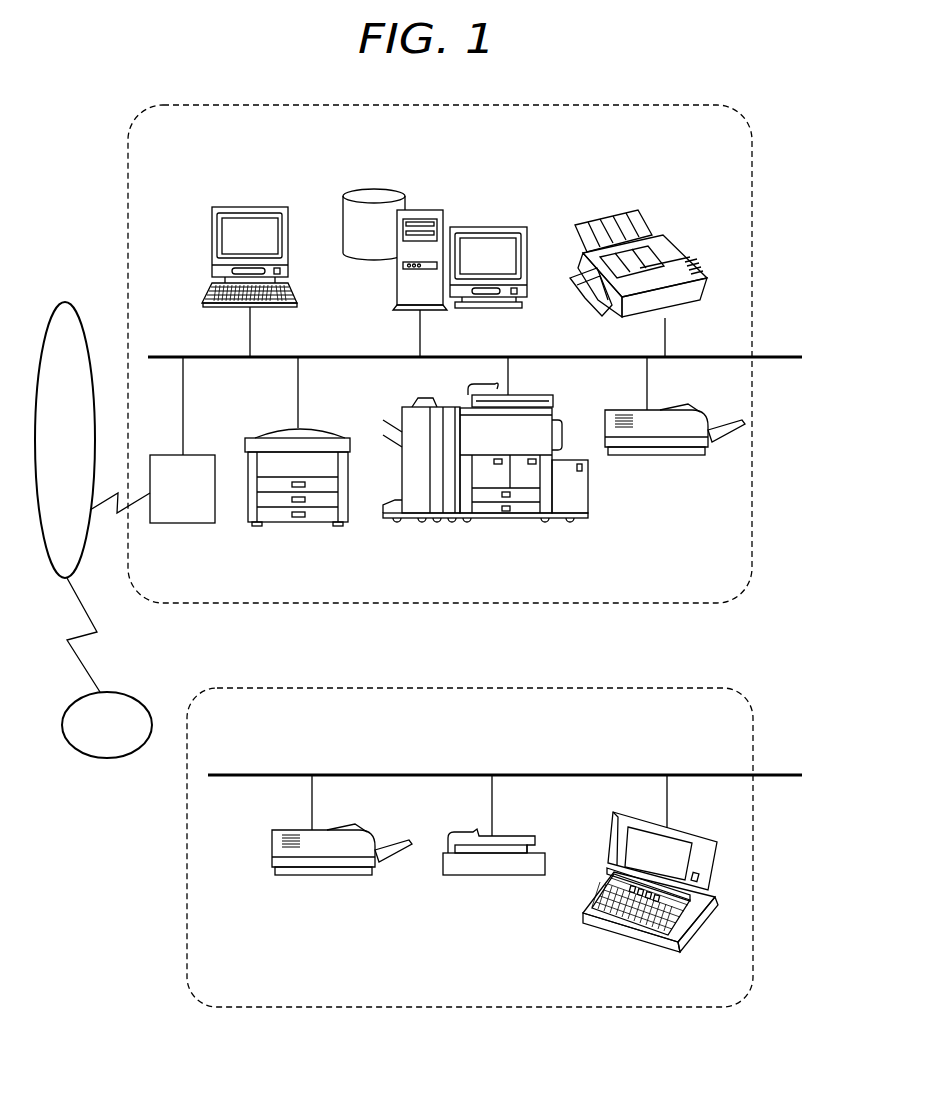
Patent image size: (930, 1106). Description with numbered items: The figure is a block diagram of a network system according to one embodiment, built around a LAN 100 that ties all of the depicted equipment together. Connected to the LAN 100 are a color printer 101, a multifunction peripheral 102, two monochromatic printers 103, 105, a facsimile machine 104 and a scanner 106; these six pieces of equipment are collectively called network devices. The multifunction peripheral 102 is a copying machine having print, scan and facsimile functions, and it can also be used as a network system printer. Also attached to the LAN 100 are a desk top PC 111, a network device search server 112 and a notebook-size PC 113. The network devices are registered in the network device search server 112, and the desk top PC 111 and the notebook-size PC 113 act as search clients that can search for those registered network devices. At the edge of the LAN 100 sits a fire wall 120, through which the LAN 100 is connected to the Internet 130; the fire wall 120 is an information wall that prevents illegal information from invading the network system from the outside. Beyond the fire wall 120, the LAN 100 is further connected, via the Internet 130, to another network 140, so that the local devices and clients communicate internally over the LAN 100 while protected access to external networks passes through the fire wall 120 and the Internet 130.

The LAN 100 is at (780, 352).
The color printer 101 is at (290, 524).
The multifunction peripheral (MFP) 102 is at (497, 520).
The monochromatic printer 103 is at (650, 455).
The facsimile machine 104 is at (611, 210).
The monochromatic printer 105 is at (323, 878).
The scanner 106 is at (497, 876).
The desk top PC 111 is at (251, 207).
The network device search server 112 is at (489, 226).
The notebook-size PC 113 is at (636, 944).
The fire wall 120 is at (185, 524).
The Internet 130 is at (64, 303).
The another network 140 is at (103, 759).